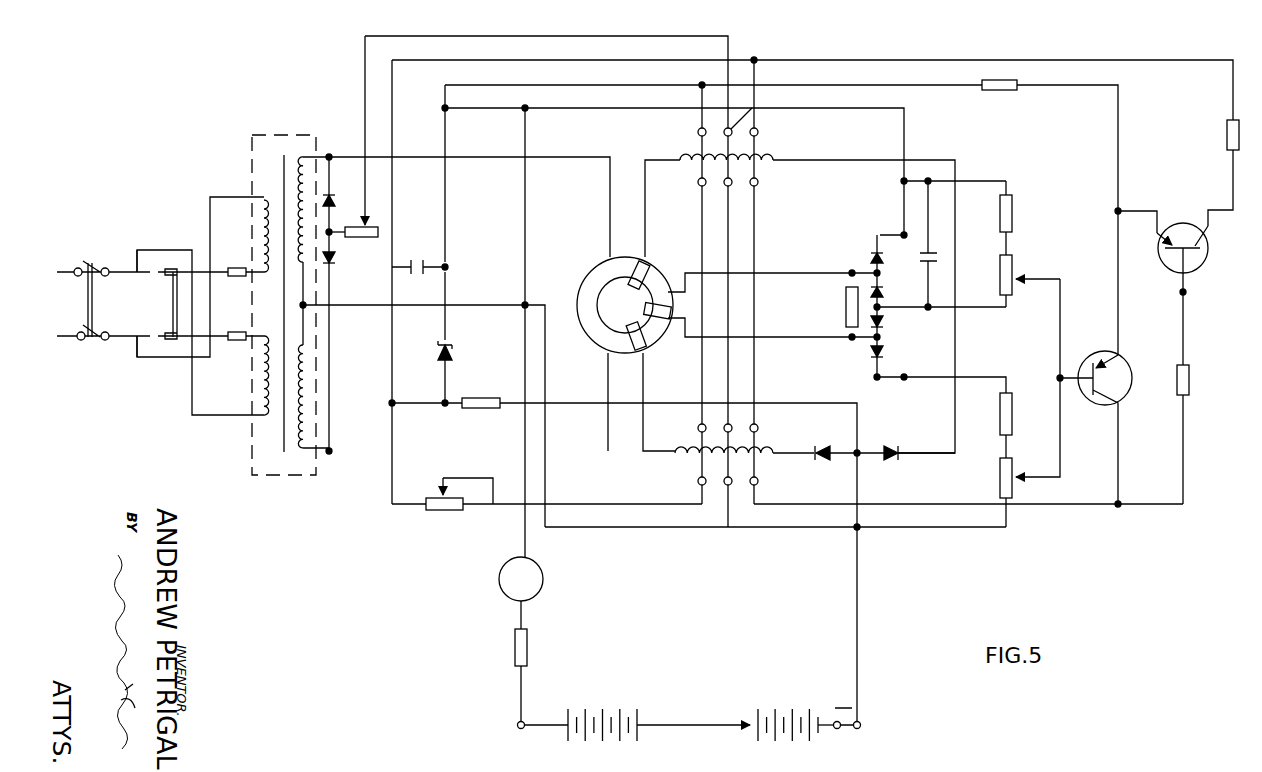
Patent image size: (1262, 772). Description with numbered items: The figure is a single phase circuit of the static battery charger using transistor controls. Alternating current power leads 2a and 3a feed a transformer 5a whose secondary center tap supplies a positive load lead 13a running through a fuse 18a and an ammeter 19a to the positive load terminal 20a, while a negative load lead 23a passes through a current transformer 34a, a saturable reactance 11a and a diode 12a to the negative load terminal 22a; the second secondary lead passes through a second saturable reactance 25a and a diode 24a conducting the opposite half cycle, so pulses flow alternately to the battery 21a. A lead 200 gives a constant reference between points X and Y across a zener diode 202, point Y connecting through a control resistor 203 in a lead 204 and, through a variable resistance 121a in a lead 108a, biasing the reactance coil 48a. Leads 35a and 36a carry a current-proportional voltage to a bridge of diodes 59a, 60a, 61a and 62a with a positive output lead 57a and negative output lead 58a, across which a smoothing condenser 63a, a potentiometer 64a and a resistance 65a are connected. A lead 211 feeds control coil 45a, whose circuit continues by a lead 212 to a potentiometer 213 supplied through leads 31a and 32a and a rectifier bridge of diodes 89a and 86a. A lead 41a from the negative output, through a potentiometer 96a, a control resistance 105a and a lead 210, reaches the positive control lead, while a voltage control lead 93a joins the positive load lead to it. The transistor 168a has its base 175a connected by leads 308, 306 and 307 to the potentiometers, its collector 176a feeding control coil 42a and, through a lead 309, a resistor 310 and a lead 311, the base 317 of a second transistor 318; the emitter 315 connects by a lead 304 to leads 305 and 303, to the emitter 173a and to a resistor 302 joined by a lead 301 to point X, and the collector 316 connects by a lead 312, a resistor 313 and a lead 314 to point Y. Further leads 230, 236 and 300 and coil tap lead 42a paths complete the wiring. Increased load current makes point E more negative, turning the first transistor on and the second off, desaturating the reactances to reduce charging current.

The A.C. power lead 2a is at (66, 345).
The A.C. power lead 3a is at (83, 285).
The transformer 5a is at (250, 446).
The saturable reactance 11a is at (768, 166).
The diode 12a is at (892, 462).
The positive load lead 13a is at (344, 306).
The fuse 18a is at (528, 644).
The ammeter 19a is at (543, 579).
The positive load terminal 20a is at (516, 728).
The battery 21a is at (578, 742).
The negative load terminal 22a is at (860, 728).
The negative load lead 23a is at (546, 160).
The diode 24a is at (822, 462).
The saturable reactance 25a is at (762, 449).
The lead 31a is at (329, 382).
The lead 32a is at (330, 152).
The current transformer 34a is at (682, 254).
The lead 35a is at (800, 272).
The lead 36a is at (800, 340).
The lead 41a is at (966, 528).
The control coil 42a is at (760, 137).
The control coil 45a is at (762, 112).
The reactance coil 48a is at (698, 138).
The positive output lead 57a is at (904, 232).
The negative output lead 58a is at (996, 308).
The diode 59a is at (868, 257).
The diode 60a is at (884, 352).
The diode 61a is at (884, 325).
The diode 62a is at (846, 297).
The smoothing condenser 63a is at (937, 258).
The potentiometer 64a is at (1014, 262).
The resistance 65a is at (1012, 216).
The rectifier diode 86a is at (334, 262).
The diode 89a is at (334, 200).
The voltage control lead 93a is at (527, 253).
The potentiometer 96a is at (1010, 500).
The control resistance 105a is at (1020, 422).
The lead 108a is at (626, 504).
The variable resistance 121a is at (445, 512).
The transistor 168a is at (1128, 372).
The emitter 173a is at (1093, 368).
The base 175a is at (1110, 362).
The collector 176a is at (1118, 400).
The lead 200 is at (570, 86).
The zener diode 202 is at (450, 352).
The control resistor 203 is at (488, 389).
The lead 204 is at (555, 408).
The lead 210 is at (924, 378).
The lead 211 is at (625, 528).
The lead 212 is at (650, 37).
The potentiometer 213 is at (350, 240).
The conductor 230 is at (859, 636).
The conductor 236 is at (560, 455).
The conductor 300 is at (462, 112).
The lead 301 is at (895, 86).
The resistor 302 is at (1000, 92).
The lead 303 is at (1120, 114).
The lead 304 is at (1150, 211).
The lead 305 is at (1120, 288).
The lead 306 is at (1060, 352).
The lead 307 is at (1060, 463).
The lead 308 is at (1096, 404).
The lead 309 is at (1150, 504).
The resistor 310 is at (1190, 383).
The lead 311 is at (1185, 325).
The lead 312 is at (1231, 172).
The resistor 313 is at (1226, 135).
The lead 314 is at (1016, 52).
The emitter 315 is at (1165, 238).
The collector 316 is at (1208, 247).
The base 317 is at (1160, 258).
The second transistor 318 is at (1200, 270).